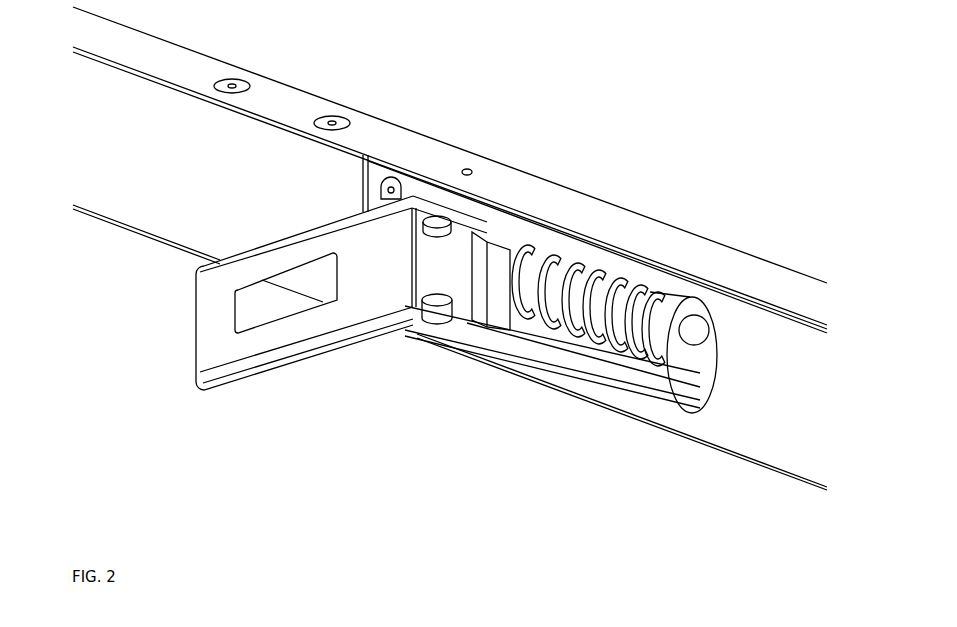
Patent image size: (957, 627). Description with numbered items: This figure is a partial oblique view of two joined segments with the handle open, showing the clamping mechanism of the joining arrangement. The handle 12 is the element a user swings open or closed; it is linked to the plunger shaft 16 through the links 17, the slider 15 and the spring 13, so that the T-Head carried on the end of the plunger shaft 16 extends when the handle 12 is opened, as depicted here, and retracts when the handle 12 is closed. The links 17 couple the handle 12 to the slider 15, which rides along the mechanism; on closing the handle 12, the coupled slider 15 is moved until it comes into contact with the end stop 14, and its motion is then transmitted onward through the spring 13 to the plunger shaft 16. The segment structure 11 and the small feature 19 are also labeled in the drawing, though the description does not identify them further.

The latch assembly 11 is at (477, 335).
The handle 12 is at (212, 364).
The spring 13 is at (608, 340).
The end stop 14 is at (625, 320).
The slider 15 is at (512, 340).
The plunger shaft 16 is at (702, 347).
The links 17 is at (478, 230).
The hole 19 is at (466, 172).